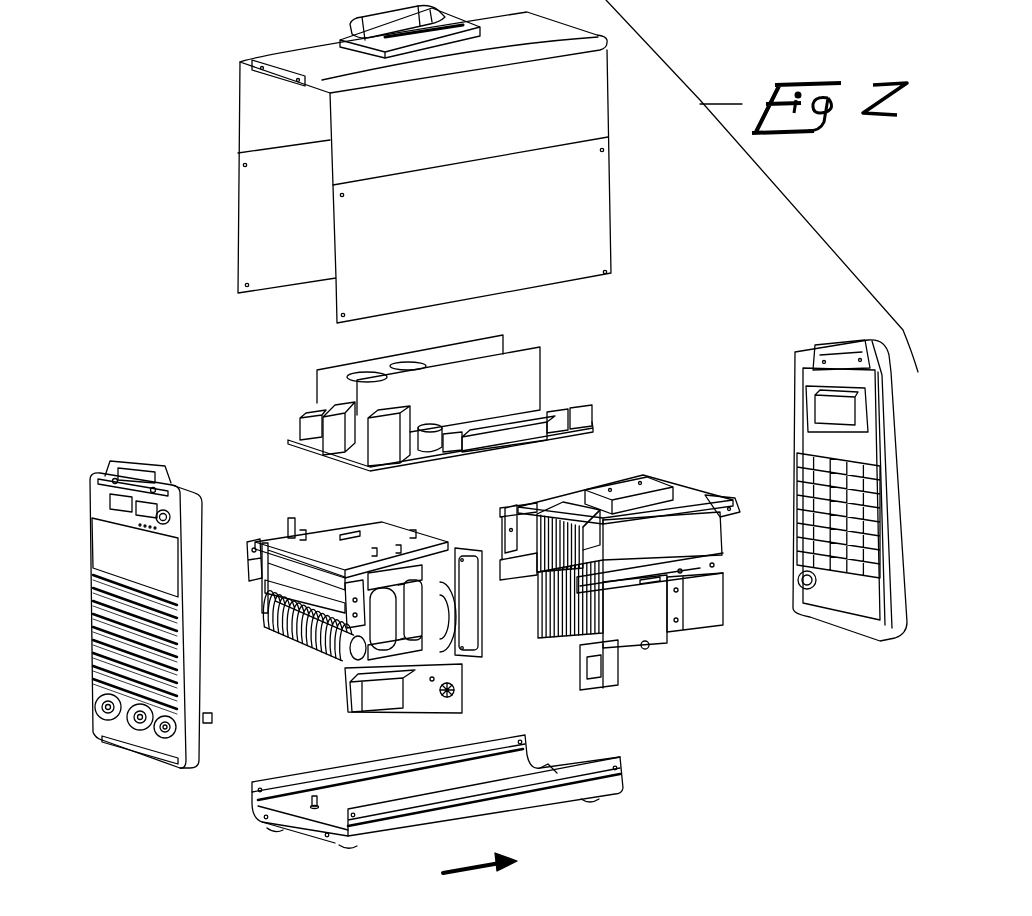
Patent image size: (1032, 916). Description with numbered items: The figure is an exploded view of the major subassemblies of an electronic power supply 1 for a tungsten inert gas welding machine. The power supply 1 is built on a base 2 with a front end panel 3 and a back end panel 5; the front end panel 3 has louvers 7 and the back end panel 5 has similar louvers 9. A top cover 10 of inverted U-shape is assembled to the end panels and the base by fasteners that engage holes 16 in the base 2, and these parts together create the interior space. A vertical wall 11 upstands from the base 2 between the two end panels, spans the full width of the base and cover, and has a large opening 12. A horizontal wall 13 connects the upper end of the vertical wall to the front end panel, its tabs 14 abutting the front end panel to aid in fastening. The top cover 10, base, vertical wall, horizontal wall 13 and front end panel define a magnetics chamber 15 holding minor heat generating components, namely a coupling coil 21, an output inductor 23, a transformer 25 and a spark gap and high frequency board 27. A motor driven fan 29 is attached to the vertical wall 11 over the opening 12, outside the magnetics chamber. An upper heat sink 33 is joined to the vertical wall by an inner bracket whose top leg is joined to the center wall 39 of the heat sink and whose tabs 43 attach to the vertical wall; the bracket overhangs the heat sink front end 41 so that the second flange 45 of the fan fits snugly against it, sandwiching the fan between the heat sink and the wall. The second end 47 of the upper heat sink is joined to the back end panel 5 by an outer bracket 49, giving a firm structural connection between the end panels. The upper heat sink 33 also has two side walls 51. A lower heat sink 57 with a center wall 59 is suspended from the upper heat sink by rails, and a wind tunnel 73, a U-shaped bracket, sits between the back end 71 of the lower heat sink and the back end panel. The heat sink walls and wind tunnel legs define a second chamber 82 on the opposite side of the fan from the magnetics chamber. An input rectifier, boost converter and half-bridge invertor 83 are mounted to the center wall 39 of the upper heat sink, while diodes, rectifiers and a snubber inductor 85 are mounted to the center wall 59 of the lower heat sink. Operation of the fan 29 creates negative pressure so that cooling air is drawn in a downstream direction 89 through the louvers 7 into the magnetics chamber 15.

The electronic power supply 1 is at (198, 840).
The base 2 is at (461, 792).
The front end panel 3 is at (133, 634).
The back end panel 5 is at (860, 516).
The louvers 7 is at (108, 653).
The louvers 9 is at (878, 483).
The top cover 10 is at (600, 211).
The vertical wall 11 is at (429, 691).
The large opening 12 is at (456, 664).
The horizontal wall 13 is at (395, 530).
The tabs 14 is at (253, 562).
The magnetics chamber 15 is at (388, 608).
The holes 16 is at (619, 772).
The coupling coil 21 is at (340, 660).
The output inductor 23 is at (357, 587).
The transformer 25 is at (407, 646).
The spark gap and high frequency board 27 is at (448, 596).
The motor driven fan 29 is at (432, 530).
The upper heat sink 33 is at (574, 492).
The center wall 39 is at (682, 502).
The front end 41 is at (532, 502).
The tabs 43 is at (512, 505).
The second flange 45 is at (483, 638).
The second end 47 is at (717, 530).
The outer bracket 49 is at (706, 494).
The side walls 51 is at (708, 530).
The lower heat sink 57 is at (642, 618).
The center wall 59 is at (557, 630).
The back end 71 is at (680, 606).
The wind tunnel 73 is at (723, 628).
The second chamber 82 is at (642, 586).
The input rectifier, boost converter, and half-bridge invertor 83 is at (626, 486).
The diodes, rectifiers, and snubber inductor 85 is at (609, 676).
The downstream direction 89 is at (477, 870).